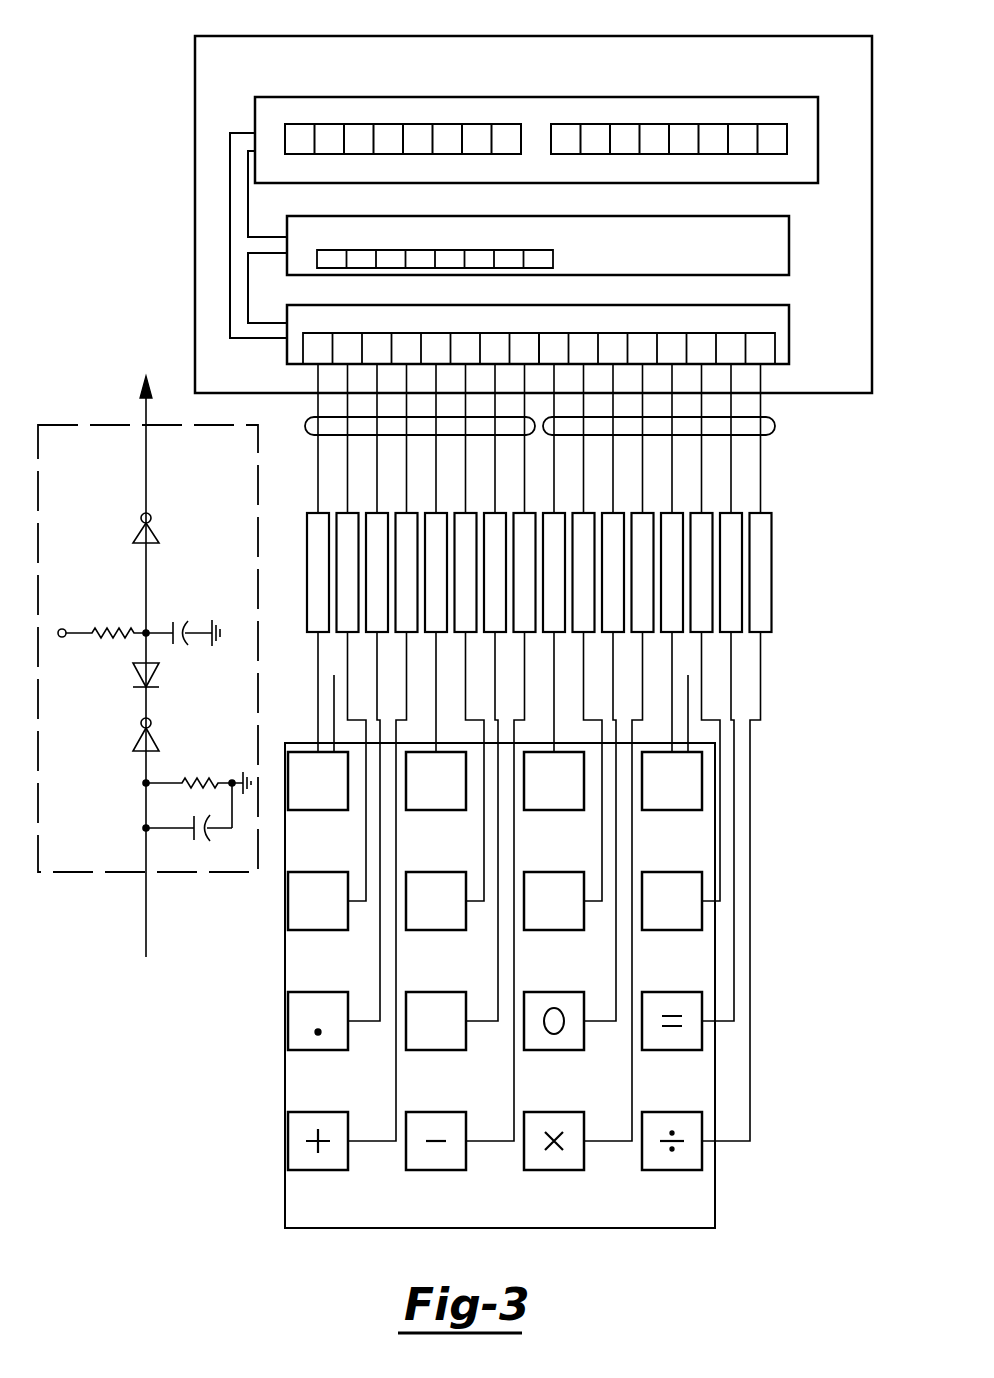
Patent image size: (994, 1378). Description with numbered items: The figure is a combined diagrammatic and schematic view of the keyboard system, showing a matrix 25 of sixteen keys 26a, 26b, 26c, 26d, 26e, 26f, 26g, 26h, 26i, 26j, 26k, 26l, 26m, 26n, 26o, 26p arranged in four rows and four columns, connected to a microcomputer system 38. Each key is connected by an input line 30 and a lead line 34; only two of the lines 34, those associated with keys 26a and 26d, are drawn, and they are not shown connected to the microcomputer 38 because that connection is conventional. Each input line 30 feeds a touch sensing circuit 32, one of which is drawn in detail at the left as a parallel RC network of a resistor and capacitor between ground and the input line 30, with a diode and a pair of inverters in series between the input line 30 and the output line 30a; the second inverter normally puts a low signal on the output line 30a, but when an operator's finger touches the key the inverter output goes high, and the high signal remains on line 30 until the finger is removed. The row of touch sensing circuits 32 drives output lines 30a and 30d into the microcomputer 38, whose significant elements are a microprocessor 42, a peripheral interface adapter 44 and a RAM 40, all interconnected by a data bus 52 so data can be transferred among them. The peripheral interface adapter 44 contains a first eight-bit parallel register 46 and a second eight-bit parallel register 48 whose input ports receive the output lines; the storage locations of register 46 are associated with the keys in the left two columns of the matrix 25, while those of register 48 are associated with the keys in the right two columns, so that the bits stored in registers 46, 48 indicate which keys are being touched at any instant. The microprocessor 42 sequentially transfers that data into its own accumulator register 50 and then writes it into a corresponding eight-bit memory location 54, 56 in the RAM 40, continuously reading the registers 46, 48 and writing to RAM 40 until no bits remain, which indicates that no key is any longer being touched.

The matrix 25 is at (285, 1072).
The key 26a is at (306, 811).
The key 26b is at (424, 811).
The key 26c is at (542, 811).
The key 26d is at (660, 811).
The key 26e is at (306, 931).
The key 26f is at (424, 931).
The key 26g is at (542, 931).
The key 26h is at (660, 931).
The key 26i is at (306, 1051).
The key 26j is at (424, 1051).
The key 26k is at (542, 1051).
The key 26l is at (660, 1051).
The key 26m is at (306, 1171).
The key 26n is at (424, 1171).
The key 26o is at (542, 1171).
The key 26p is at (660, 1171).
The input line 30 is at (318, 700).
The output line 30a is at (305, 430).
The output line 30d is at (775, 428).
The touch sensing circuit 32 is at (60, 425).
The lead line 34 is at (334, 690).
The microcomputer system 38 is at (661, 10).
The RAM 40 is at (735, 70).
The microprocessor 42 is at (790, 262).
The peripheral interface adapter 44 is at (790, 322).
The first eight-bit parallel register 46 is at (361, 334).
The second eight-bit parallel register 48 is at (660, 334).
The accumulator register 50 is at (413, 246).
The data bus 52 is at (230, 228).
The eight-bit memory location 54 is at (478, 167).
The eight-bit memory location 56 is at (762, 160).